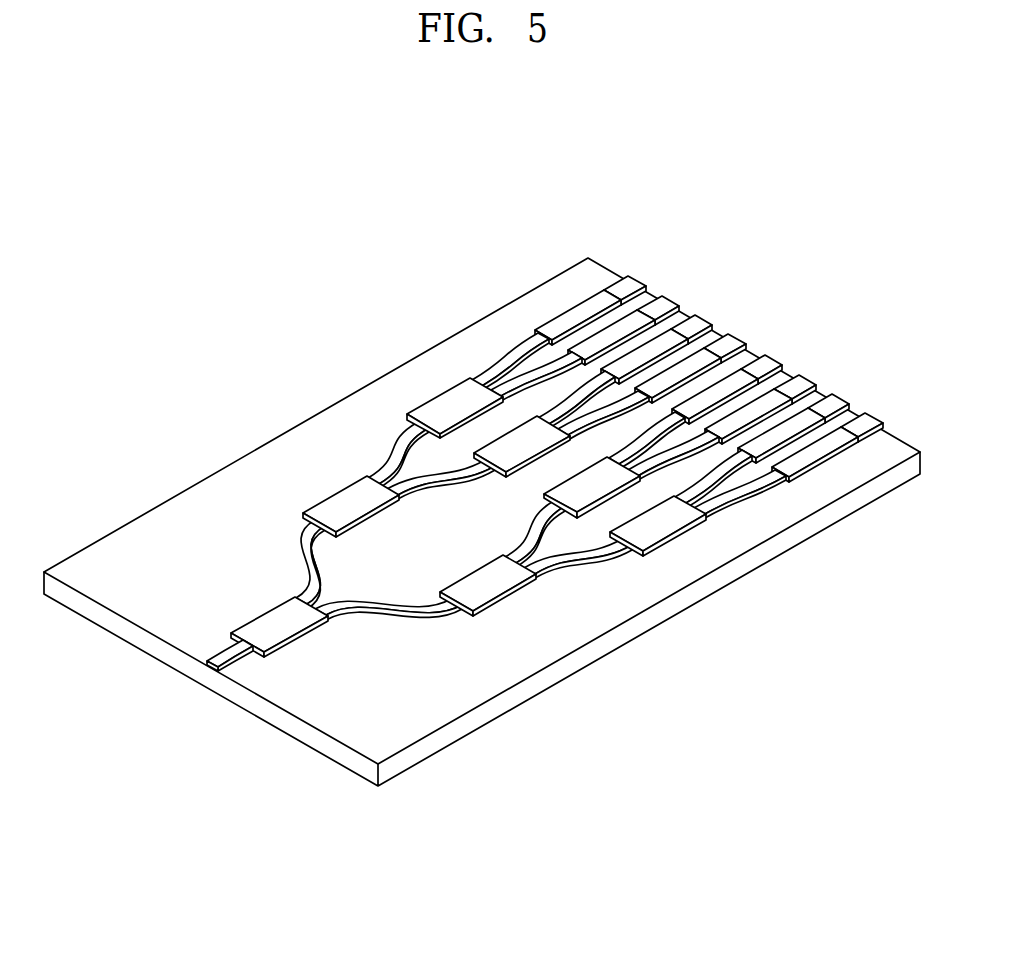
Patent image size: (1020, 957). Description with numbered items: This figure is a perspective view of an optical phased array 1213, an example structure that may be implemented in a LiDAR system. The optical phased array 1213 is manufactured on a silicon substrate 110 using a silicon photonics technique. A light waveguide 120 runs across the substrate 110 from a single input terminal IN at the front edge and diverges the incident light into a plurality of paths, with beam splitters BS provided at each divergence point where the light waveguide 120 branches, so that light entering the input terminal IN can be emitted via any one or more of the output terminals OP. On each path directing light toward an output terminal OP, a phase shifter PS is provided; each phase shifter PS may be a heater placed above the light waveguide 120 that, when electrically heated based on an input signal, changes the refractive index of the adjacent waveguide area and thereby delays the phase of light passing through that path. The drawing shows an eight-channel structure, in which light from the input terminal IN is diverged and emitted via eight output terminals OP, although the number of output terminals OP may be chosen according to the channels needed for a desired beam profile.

The optical phased array 1213 is at (220, 306).
The silicon substrate 110 is at (428, 748).
The light waveguide 120 is at (402, 616).
The input terminal IN is at (207, 668).
The beam splitter BS is at (442, 398).
The phase shifter PS is at (572, 316).
The output terminal OP is at (640, 283).